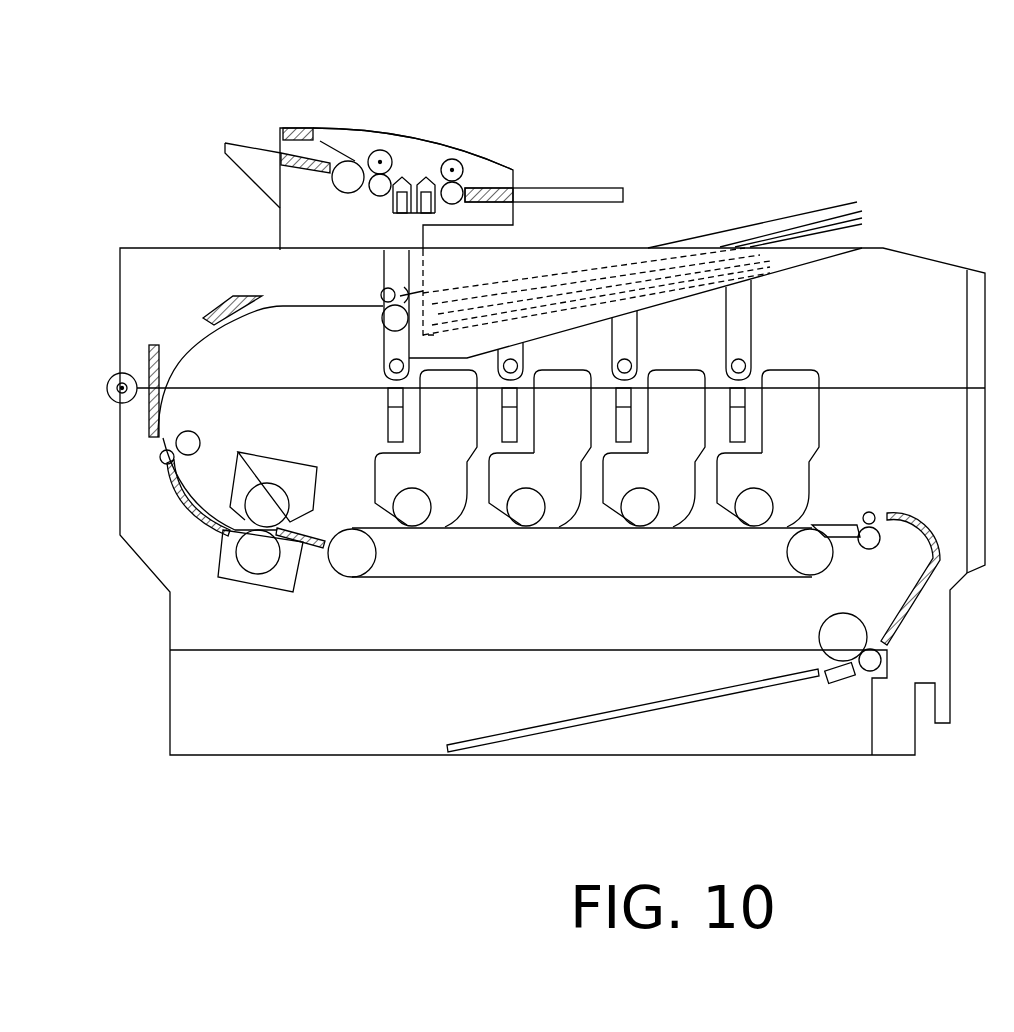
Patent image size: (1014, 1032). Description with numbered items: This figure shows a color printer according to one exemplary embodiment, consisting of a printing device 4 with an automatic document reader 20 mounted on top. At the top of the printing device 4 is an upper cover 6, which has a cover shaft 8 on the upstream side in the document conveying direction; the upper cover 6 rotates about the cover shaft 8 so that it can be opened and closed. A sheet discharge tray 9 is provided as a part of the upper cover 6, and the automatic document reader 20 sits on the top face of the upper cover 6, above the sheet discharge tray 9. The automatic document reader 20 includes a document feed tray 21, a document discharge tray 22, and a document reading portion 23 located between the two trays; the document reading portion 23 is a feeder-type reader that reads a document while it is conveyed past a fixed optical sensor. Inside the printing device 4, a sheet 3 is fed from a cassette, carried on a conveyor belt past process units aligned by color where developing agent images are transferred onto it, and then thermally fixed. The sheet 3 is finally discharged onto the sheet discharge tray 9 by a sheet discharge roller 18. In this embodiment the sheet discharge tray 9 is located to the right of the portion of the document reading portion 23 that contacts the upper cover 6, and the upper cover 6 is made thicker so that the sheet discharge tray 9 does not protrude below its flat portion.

The sheet 3 is at (818, 221).
The printing device 4 is at (102, 560).
The upper cover 6 is at (930, 280).
The cover shaft 8 is at (108, 394).
The sheet discharge tray 9 is at (594, 280).
The sheet discharge roller 18 is at (382, 318).
The automatic document reader 20 is at (313, 90).
The document feed tray 21 is at (245, 145).
The document discharge tray 22 is at (582, 188).
The document reading portion 23 is at (410, 145).